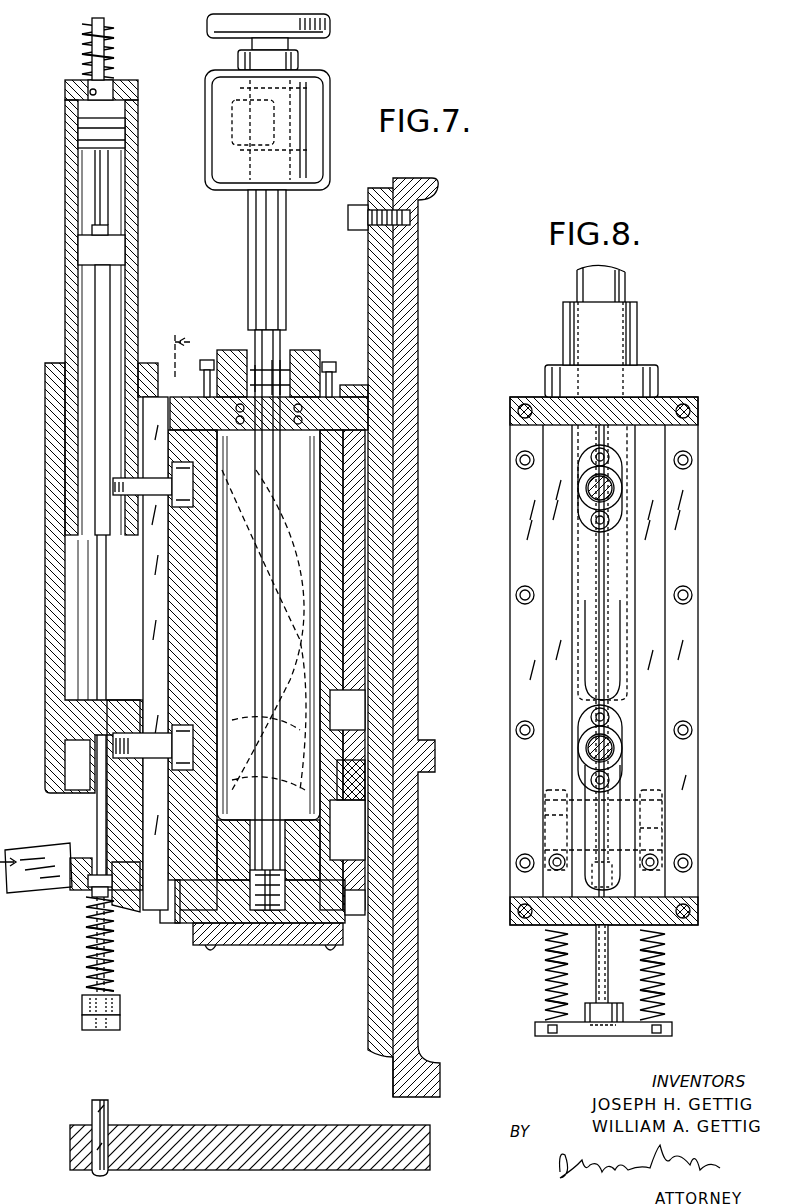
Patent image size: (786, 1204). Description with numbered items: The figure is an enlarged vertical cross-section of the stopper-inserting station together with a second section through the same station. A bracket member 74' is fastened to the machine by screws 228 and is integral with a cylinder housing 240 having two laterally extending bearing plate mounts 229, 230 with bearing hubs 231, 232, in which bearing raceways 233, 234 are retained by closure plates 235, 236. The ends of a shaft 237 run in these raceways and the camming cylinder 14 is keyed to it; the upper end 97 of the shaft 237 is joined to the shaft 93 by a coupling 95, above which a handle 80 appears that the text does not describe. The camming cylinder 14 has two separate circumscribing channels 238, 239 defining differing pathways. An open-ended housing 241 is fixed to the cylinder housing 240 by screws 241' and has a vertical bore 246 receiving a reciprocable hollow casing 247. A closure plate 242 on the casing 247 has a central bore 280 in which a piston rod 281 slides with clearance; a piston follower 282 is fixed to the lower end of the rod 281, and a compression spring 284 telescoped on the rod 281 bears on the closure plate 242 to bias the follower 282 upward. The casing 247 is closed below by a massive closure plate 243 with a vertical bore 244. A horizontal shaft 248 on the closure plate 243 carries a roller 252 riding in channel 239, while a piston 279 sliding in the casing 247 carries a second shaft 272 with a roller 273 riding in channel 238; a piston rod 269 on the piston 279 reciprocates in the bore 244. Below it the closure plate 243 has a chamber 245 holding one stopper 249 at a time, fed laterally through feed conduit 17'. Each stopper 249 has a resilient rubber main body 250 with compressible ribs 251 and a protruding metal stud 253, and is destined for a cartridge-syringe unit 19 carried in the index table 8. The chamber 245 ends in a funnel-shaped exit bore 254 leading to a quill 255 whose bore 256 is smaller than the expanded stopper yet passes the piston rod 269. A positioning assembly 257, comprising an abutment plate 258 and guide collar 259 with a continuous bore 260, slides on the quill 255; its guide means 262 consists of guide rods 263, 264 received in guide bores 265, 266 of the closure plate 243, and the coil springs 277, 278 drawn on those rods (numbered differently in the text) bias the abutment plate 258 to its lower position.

In FIG. 7, the index table 8 is at (226, 1128).
In FIG. 7, the camming cylinder 14 is at (330, 481).
In FIG. 7, the feed conduit 17' is at (36, 879).
In FIG. 7, the cartridge-syringe unit 19 is at (108, 1110).
In FIG. 7, the bracket member 74' is at (384, 637).
In FIG. 7, the handle 80 is at (330, 28).
In FIG. 7, the shaft 93 is at (290, 44).
In FIG. 7, the coupling 95 is at (325, 146).
In FIG. 7, the upper end of shaft 97 is at (258, 245).
In FIG. 7, the screws 228 is at (348, 219).
In FIG. 7, the bearing plate mount 229 is at (198, 392).
In FIG. 7, the bearing plate mount 230 is at (355, 925).
In FIG. 7, the bearing hub 231 is at (320, 372).
In FIG. 7, the bearing hub 232 is at (312, 955).
In FIG. 7, the bearing raceway 233 is at (300, 350).
In FIG. 7, the bearing raceway 234 is at (288, 945).
In FIG. 7, the closure plate 235 is at (232, 352).
In FIG. 7, the closure plate 236 is at (225, 950).
In FIG. 7, the shaft 237 is at (275, 650).
In FIG. 7, the channel 238 is at (360, 700).
In FIG. 7, the channel 239 is at (365, 820).
In FIG. 7, the cylinder housing 240 is at (362, 388).
In FIG. 7, the open-ended housing 241 is at (83, 578).
In FIG. 8, the open-ended housing 241 is at (624, 661).
In FIG. 8, the screws 241' is at (633, 661).
In FIG. 7, the closure plate 242 is at (130, 92).
In FIG. 7, the bottom closure plate 243 is at (75, 750).
In FIG. 8, the bottom closure plate 243 is at (660, 805).
In FIG. 7, the bore 244 is at (78, 685).
In FIG. 7, the chamber 245 is at (135, 908).
In FIG. 7, the vertical bore 246 is at (68, 778).
In FIG. 7, the hollow casing 247 is at (67, 233).
In FIG. 8, the hollow casing 247 is at (566, 329).
In FIG. 7, the shaft 248 is at (170, 755).
In FIG. 8, the shaft 248 is at (614, 748).
In FIG. 7, the stopper 249 is at (96, 886).
In FIG. 8, the main body 250 is at (596, 962).
In FIG. 7, the compressible ribs 251 is at (80, 890).
In FIG. 7, the roller 252 is at (190, 745).
In FIG. 7, the metal stud 253 is at (95, 875).
In FIG. 7, the funnel-shaped exit bore 254 is at (90, 915).
In FIG. 7, the quill 255 is at (88, 945).
In FIG. 7, the bore 256 is at (88, 963).
In FIG. 8, the positioning assembly 257 is at (540, 994).
In FIG. 7, the abutment plate 258 is at (82, 1026).
In FIG. 8, the abutment plate 258 is at (632, 1036).
In FIG. 7, the guide collar 259 is at (82, 1007).
In FIG. 8, the guide collar 259 is at (592, 1025).
In FIG. 8, the bore 260 is at (598, 1003).
In FIG. 8, the guide means 262 is at (672, 990).
In FIG. 8, the guide rod 263 is at (550, 968).
In FIG. 8, the guide rod 264 is at (665, 967).
In FIG. 8, the guide bore 265 is at (545, 816).
In FIG. 8, the guide bore 266 is at (662, 828).
In FIG. 7, the piston rod 269 is at (98, 582).
In FIG. 7, the second shaft 272 is at (140, 484).
In FIG. 8, the second shaft 272 is at (614, 488).
In FIG. 7, the roller 273 is at (190, 500).
In FIG. 8, the spring 277 is at (547, 948).
In FIG. 7, the spring 278 is at (110, 960).
In FIG. 8, the spring 278 is at (665, 944).
In FIG. 7, the piston 279 is at (85, 311).
In FIG. 7, the central bore 280 is at (90, 90).
In FIG. 7, the piston rod 281 is at (110, 62).
In FIG. 7, the piston follower 282 is at (125, 134).
In FIG. 7, the compression spring 284 is at (110, 38).